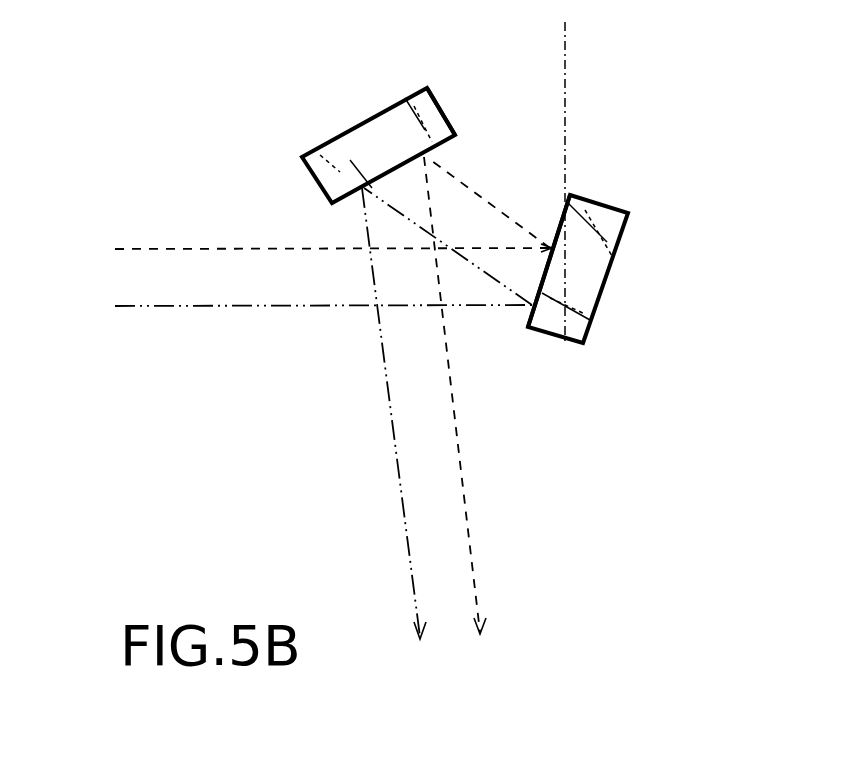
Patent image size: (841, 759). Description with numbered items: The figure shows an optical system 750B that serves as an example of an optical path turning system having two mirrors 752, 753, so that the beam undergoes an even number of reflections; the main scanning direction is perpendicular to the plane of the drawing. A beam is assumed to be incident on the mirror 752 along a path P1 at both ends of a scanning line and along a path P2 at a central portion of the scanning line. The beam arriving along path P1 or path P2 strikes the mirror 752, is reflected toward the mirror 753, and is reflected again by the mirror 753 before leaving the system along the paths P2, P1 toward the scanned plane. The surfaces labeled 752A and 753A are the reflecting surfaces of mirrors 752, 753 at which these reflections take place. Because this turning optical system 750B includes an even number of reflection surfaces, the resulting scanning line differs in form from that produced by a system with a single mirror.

The optical system 750B is at (622, 58).
The mirror 753 is at (360, 122).
The reflecting surface of first optical element 753A is at (458, 147).
The mirror 752 is at (610, 277).
The reflecting surface of second optical element 752A is at (563, 226).
The path P1 is at (311, 414).
The path P2 is at (301, 429).